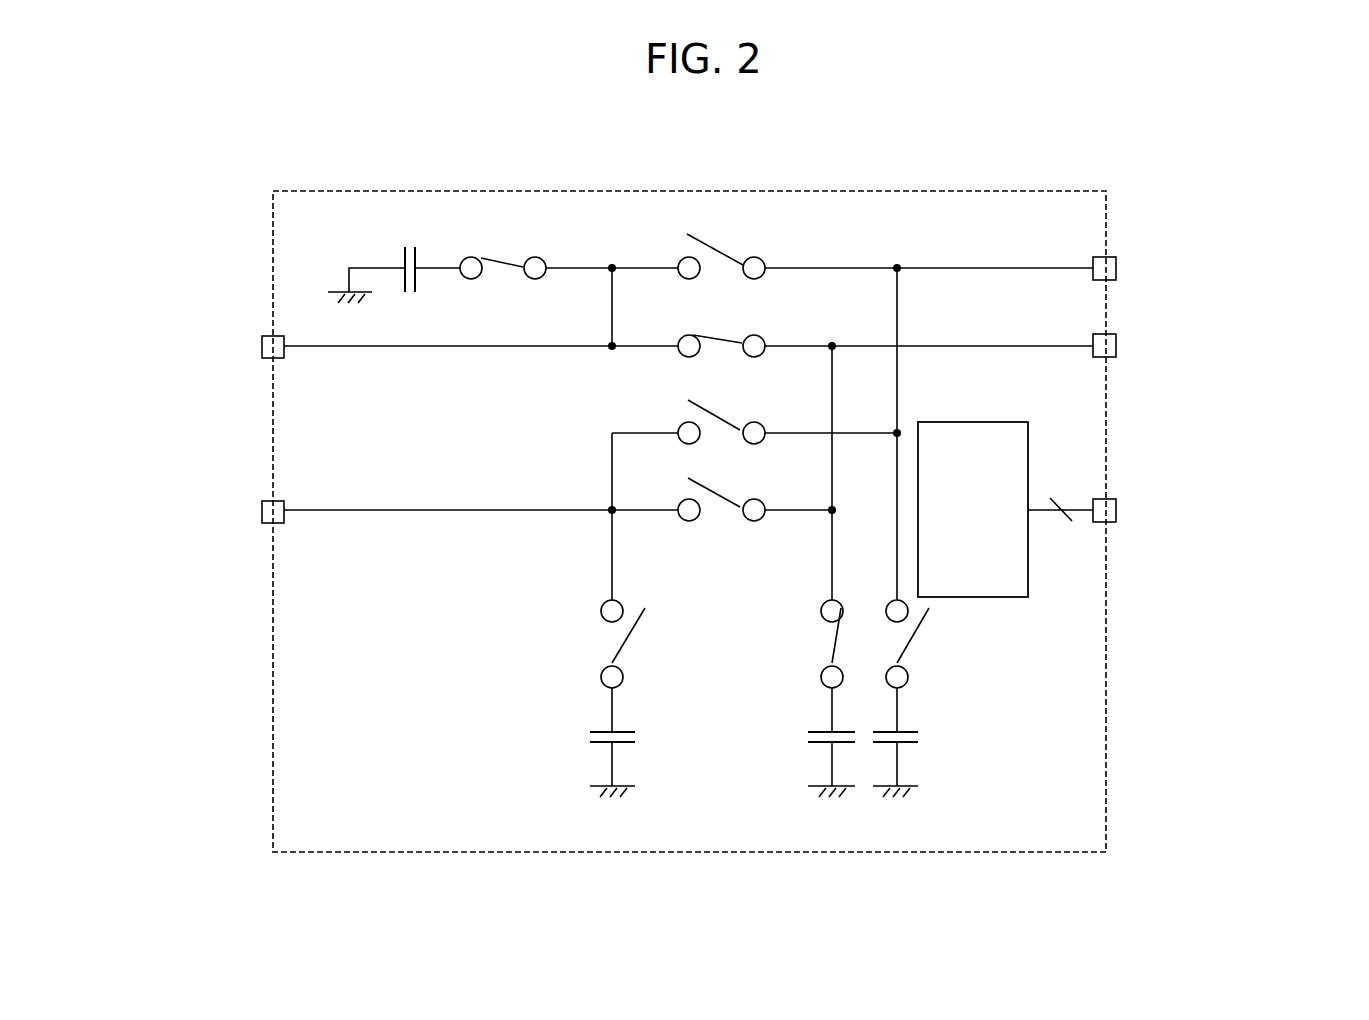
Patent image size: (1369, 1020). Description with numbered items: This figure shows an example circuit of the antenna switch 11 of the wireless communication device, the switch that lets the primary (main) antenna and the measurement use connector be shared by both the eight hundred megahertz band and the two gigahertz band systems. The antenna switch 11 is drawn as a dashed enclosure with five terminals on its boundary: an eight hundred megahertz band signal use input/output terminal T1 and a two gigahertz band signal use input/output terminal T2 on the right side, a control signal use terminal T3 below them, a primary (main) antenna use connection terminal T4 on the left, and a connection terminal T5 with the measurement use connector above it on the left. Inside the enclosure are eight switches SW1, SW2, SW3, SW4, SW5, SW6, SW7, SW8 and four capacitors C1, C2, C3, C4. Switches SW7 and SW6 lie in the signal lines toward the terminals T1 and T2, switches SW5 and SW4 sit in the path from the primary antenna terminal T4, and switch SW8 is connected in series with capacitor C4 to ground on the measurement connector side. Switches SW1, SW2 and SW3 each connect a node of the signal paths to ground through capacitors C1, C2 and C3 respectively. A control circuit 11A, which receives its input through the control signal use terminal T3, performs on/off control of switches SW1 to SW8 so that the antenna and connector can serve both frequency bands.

The antenna switch 11 is at (708, 190).
The control circuit 11A is at (997, 421).
The 800 MHz band signal use input/output terminal T1 is at (1116, 257).
The 2 GHz band signal use input/output terminal T2 is at (1116, 334).
The control signal use terminal T3 is at (1116, 499).
The primary antenna use connection terminal T4 is at (262, 501).
The connection terminal with the measurement use connector T5 is at (262, 336).
The switch SW1 is at (920, 639).
The switch SW2 is at (822, 639).
The switch SW3 is at (608, 638).
The switch SW4 is at (728, 491).
The switch SW5 is at (728, 413).
The switch SW6 is at (728, 328).
The switch SW7 is at (728, 248).
The switch SW8 is at (502, 272).
The capacitor C1 is at (922, 737).
The capacitor C2 is at (805, 737).
The capacitor C3 is at (587, 737).
The capacitor C4 is at (412, 246).